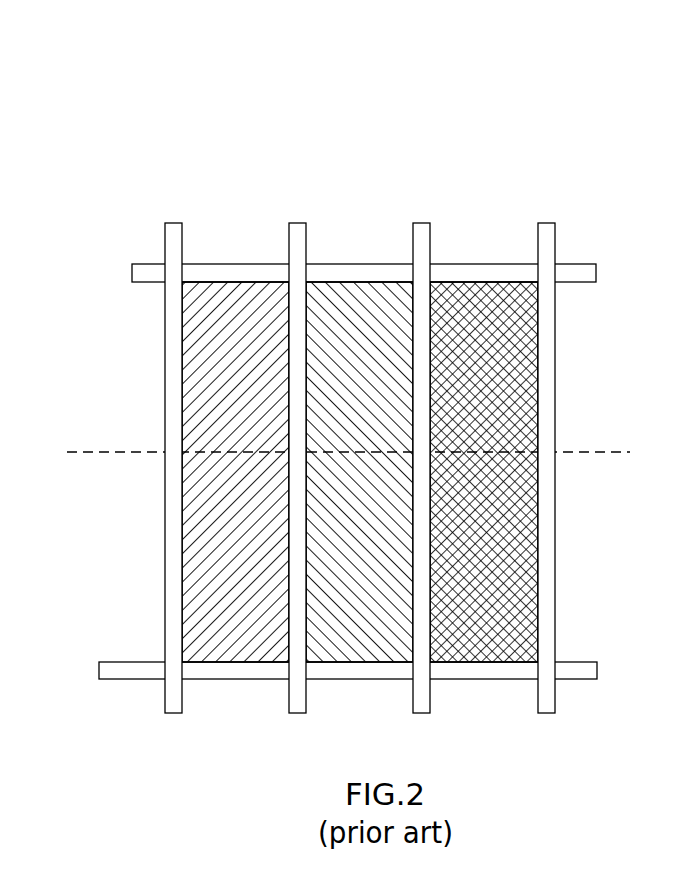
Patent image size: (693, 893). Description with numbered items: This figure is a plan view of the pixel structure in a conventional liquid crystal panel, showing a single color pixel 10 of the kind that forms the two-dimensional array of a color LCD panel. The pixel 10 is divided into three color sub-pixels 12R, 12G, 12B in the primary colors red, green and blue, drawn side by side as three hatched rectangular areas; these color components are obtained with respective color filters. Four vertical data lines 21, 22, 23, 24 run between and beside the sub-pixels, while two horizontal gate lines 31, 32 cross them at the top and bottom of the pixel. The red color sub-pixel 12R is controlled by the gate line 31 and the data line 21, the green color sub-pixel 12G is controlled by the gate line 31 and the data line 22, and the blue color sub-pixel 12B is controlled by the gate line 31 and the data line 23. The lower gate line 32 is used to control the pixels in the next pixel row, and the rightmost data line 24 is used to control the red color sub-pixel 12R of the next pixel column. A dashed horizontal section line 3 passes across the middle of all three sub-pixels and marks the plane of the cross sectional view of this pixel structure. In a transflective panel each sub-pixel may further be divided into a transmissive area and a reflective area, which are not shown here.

The pixel 10 is at (518, 102).
The section line 3-3' 3 is at (359, 452).
The data line 21 is at (164, 240).
The data line 22 is at (307, 240).
The data line 23 is at (431, 240).
The data line 24 is at (556, 240).
The gate line 31 is at (150, 283).
The gate line 32 is at (150, 661).
The color sub-pixel 12R is at (248, 697).
The color sub-pixel 12G is at (348, 697).
The color sub-pixel 12B is at (480, 697).